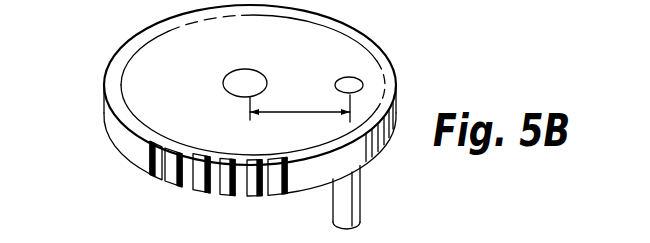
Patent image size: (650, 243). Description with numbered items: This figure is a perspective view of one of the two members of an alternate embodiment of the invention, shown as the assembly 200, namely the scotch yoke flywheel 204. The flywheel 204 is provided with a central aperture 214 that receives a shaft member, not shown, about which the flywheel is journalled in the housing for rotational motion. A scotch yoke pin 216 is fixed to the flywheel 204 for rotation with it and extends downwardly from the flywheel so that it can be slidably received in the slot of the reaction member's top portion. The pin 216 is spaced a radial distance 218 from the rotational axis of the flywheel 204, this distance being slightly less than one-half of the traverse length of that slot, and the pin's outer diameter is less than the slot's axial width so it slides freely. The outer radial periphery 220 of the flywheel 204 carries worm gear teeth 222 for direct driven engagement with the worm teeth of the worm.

The dial assembly 200 is at (266, 117).
The scotch yoke flywheel 204 is at (398, 59).
The central aperture 214 is at (252, 80).
The scotch yoke pin 216 is at (361, 200).
The radial distance 218 is at (290, 113).
The outer radial periphery 220 is at (105, 82).
The worm gear teeth 222 is at (172, 178).